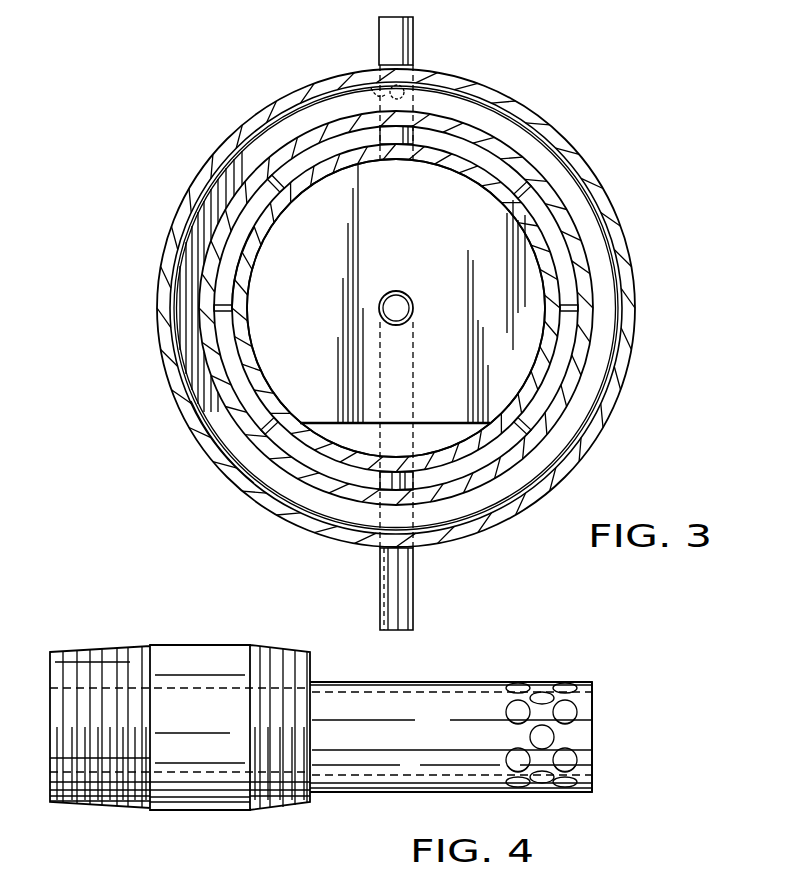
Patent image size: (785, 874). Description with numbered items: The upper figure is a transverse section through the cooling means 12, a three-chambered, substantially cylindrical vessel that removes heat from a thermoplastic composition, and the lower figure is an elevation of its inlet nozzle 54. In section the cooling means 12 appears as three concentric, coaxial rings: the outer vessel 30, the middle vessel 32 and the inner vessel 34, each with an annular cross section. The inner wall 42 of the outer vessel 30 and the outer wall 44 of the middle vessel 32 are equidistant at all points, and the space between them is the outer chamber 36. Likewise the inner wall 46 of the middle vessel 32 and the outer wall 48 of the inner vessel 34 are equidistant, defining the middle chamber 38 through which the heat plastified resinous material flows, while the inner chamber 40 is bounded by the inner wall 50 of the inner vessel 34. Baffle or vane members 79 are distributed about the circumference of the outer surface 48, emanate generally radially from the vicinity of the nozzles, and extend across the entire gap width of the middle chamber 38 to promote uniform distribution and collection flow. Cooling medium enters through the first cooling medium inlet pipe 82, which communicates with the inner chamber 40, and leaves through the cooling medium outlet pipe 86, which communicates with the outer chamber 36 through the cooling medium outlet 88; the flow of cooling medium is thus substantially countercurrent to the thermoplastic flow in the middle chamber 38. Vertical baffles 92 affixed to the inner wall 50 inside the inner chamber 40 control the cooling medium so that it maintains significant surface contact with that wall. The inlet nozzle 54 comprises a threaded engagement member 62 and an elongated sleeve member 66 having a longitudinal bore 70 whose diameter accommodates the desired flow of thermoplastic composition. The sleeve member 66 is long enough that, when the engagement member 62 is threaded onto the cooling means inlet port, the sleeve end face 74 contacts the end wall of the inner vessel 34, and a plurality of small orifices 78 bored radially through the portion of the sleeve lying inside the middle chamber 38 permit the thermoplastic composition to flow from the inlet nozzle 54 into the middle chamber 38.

In FIG. 3, the cooling means 12 is at (217, 92).
In FIG. 3, the outer vessel 30 is at (627, 266).
In FIG. 3, the middle vessel 32 is at (553, 203).
In FIG. 3, the inner vessel 34 is at (486, 180).
In FIG. 3, the outer chamber 36 is at (283, 128).
In FIG. 3, the middle chamber 38 is at (262, 196).
In FIG. 3, the inner chamber 40 is at (275, 258).
In FIG. 3, the inner wall of outer vessel 42 is at (178, 260).
In FIG. 3, the outer wall of middle vessel 44 is at (198, 302).
In FIG. 3, the inner wall of middle vessel 46 is at (223, 348).
In FIG. 3, the outer wall of inner vessel 48 is at (240, 458).
In FIG. 3, the inner wall of inner vessel 50 is at (542, 343).
In FIG. 3, the baffle or vane members 79 is at (277, 192).
In FIG. 3, the first cooling medium inlet pipe 82 is at (380, 595).
In FIG. 3, the cooling medium outlet pipe 86 is at (393, 45).
In FIG. 3, the cooling medium outlet 88 is at (367, 80).
In FIG. 3, the vertical baffles 92 is at (436, 430).
In FIG. 4, the inlet nozzle 54 is at (198, 628).
In FIG. 4, the threaded engagement member 62 is at (102, 675).
In FIG. 4, the elongated sleeve member 66 is at (452, 681).
In FIG. 4, the longitudinal bore 70 is at (410, 733).
In FIG. 4, the sleeve end face 74 is at (593, 710).
In FIG. 4, the small orifices 78 is at (568, 758).